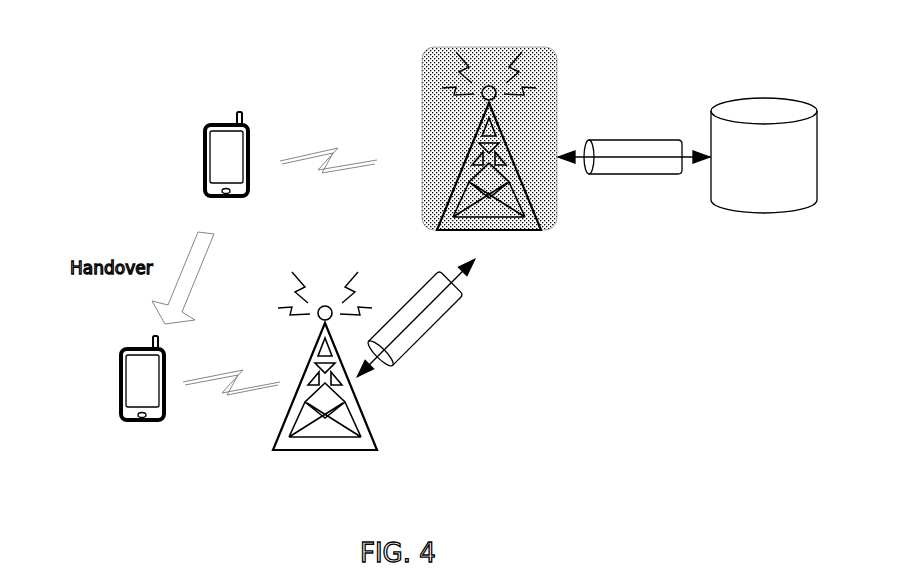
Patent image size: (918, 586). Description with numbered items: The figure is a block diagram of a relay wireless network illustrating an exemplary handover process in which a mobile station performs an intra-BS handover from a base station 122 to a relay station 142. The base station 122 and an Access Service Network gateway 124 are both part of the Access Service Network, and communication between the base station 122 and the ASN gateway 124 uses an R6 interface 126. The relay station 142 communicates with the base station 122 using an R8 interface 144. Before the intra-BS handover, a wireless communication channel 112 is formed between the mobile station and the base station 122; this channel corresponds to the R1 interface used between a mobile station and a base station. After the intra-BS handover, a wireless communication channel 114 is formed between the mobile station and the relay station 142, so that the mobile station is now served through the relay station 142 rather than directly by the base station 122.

The wireless communication channel 112 is at (326, 150).
The wireless communication channel 114 is at (226, 396).
The base station 122 is at (557, 213).
The Access Service Network Gateway 124 is at (762, 108).
The R6 interface 126 is at (628, 141).
The relay station 142 is at (377, 442).
The R8 interface 144 is at (432, 327).